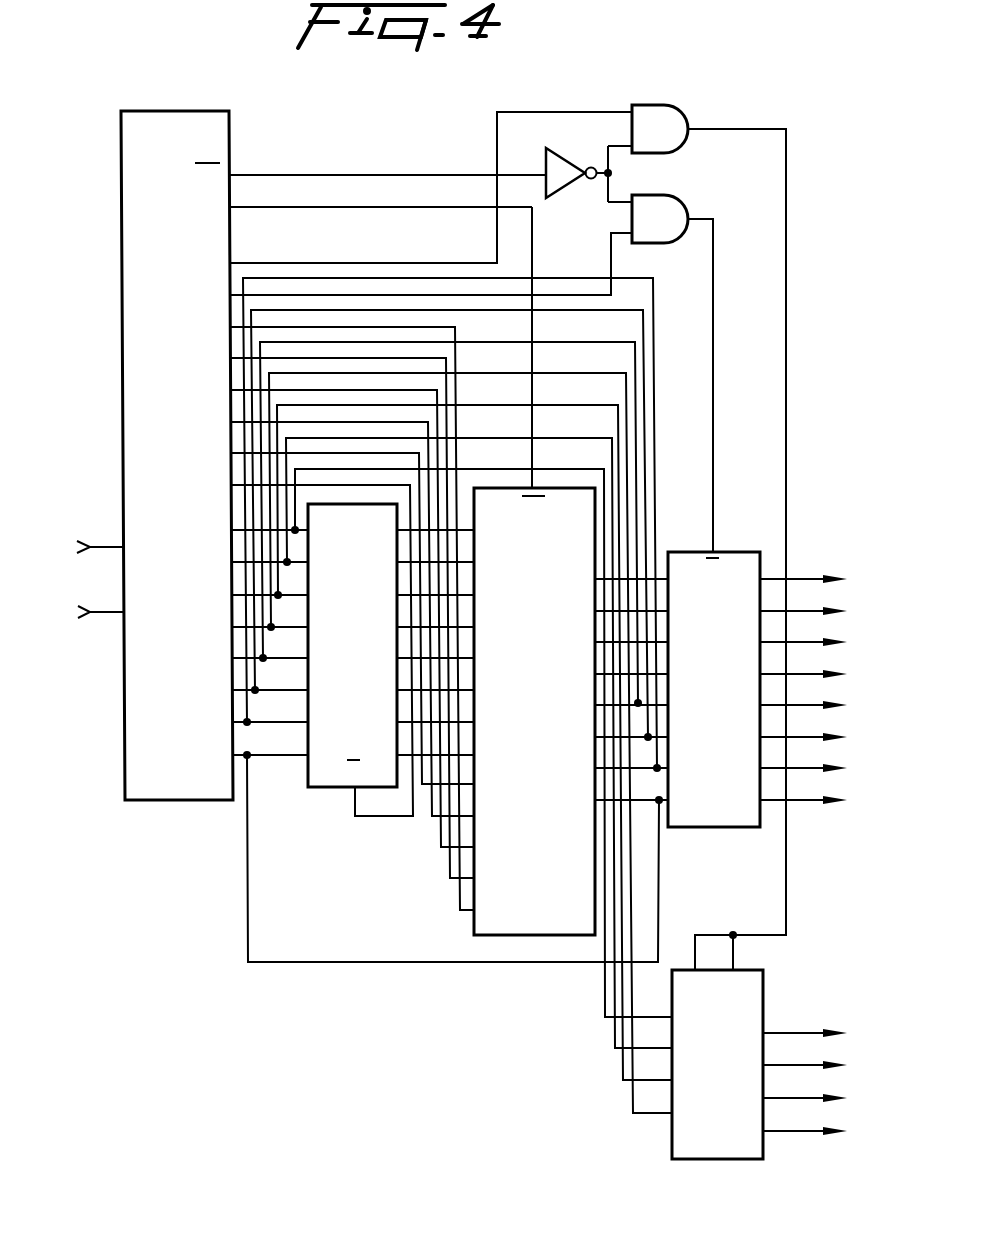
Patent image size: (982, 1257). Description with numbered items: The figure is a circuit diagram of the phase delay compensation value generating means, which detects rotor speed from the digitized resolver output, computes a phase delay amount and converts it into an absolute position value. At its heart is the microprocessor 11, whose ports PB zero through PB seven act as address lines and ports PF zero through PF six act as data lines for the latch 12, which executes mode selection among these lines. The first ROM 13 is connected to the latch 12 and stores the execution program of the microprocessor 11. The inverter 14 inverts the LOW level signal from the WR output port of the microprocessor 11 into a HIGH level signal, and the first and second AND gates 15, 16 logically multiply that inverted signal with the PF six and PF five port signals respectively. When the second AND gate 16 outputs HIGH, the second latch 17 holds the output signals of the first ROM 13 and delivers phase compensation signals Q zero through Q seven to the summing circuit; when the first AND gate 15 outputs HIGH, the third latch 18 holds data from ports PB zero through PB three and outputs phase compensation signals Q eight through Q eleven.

The microprocessor 11 is at (181, 802).
The latch 12 is at (336, 790).
The first ROM 13 is at (532, 937).
The inverter 14 is at (563, 193).
The first AND gate 15 is at (676, 105).
The second AND gate 16 is at (680, 200).
The second latch 17 is at (742, 552).
The third latch 18 is at (670, 1140).